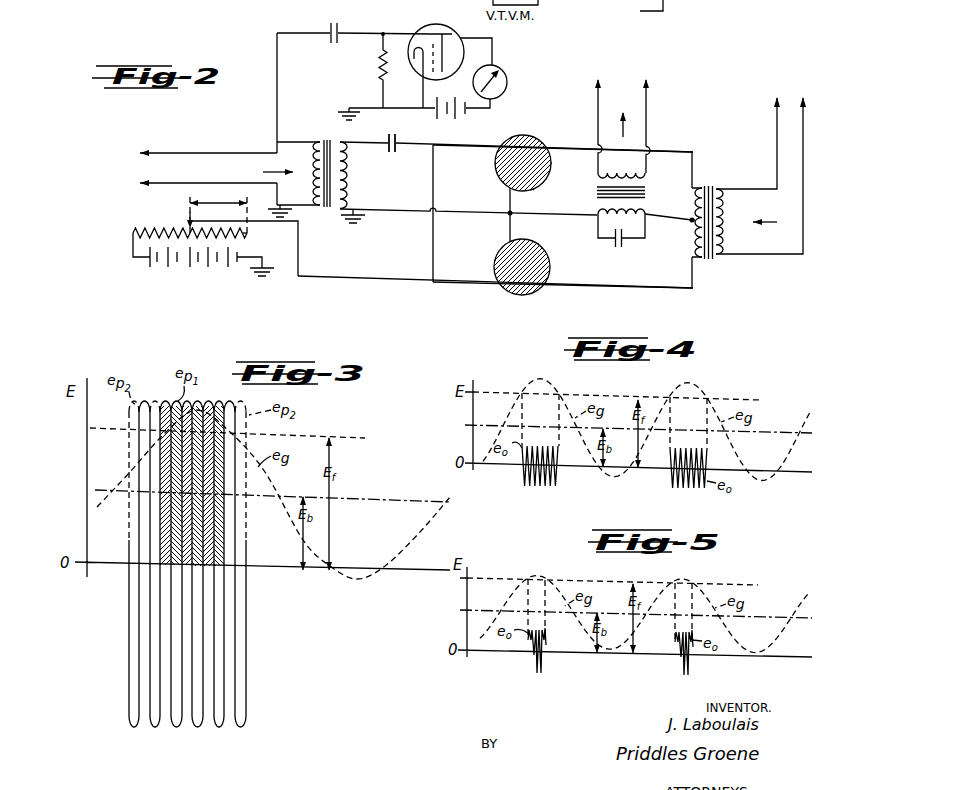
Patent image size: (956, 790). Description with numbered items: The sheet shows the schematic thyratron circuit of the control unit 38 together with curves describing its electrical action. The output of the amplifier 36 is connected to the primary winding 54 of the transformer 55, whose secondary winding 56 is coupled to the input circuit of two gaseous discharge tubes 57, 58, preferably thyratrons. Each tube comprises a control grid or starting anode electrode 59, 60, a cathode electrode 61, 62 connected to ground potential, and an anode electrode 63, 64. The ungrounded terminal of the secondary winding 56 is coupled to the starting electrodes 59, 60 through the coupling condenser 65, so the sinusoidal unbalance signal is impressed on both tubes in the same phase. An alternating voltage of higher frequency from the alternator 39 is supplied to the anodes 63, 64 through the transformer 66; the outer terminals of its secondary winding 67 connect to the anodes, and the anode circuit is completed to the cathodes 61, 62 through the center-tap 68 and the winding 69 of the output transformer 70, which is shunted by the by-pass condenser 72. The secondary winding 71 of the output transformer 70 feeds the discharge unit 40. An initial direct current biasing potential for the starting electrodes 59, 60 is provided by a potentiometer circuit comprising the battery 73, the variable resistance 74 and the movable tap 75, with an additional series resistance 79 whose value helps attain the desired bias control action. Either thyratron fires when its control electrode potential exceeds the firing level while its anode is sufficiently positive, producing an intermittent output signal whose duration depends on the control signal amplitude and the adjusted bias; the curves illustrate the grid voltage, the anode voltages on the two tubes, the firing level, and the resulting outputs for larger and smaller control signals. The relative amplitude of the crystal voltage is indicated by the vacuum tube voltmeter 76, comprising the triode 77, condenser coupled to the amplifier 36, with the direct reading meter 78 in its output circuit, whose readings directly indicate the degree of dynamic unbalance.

The amplifier 36 is at (199, 169).
The control unit 38 is at (563, 231).
The alternator 39 is at (786, 149).
The discharge unit 40 is at (626, 103).
The primary winding 54 is at (320, 208).
The transformer 55 is at (331, 140).
The secondary winding 56 is at (347, 172).
The gaseous discharge tube 57 is at (541, 144).
The gaseous discharge tube 58 is at (548, 276).
The control grid or starting anode electrode 59 is at (533, 189).
The control grid or starting anode electrode 60 is at (537, 244).
The cathode electrode 61 is at (497, 172).
The cathode electrode 62 is at (496, 260).
The anode electrode 63 is at (551, 163).
The anode electrode 64 is at (550, 261).
The coupling condenser 65 is at (392, 153).
The transformer 66 is at (709, 186).
The secondary winding 67 is at (693, 254).
The center-tap 68 is at (692, 226).
The winding 69 is at (645, 214).
The output transformer 70 is at (597, 192).
The secondary winding 71 is at (646, 172).
The by-pass condenser 72 is at (619, 250).
The battery 73 is at (175, 268).
The variable resistance 74 is at (160, 229).
The movable tap 75 is at (187, 221).
The vacuum tube voltmeter 76 is at (414, 85).
The triode 77 is at (450, 27).
The direct reading meter 78 is at (507, 82).
The additional series resistance 79 is at (245, 235).